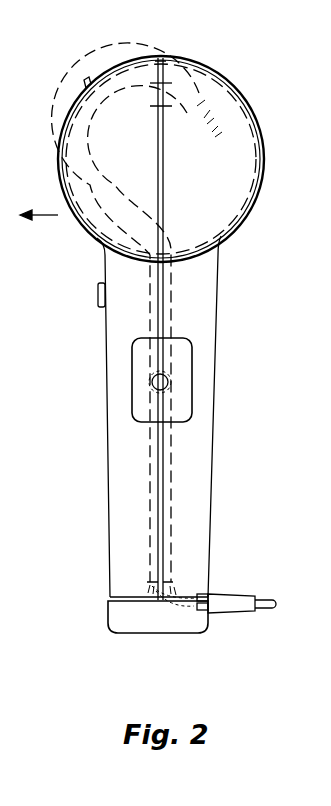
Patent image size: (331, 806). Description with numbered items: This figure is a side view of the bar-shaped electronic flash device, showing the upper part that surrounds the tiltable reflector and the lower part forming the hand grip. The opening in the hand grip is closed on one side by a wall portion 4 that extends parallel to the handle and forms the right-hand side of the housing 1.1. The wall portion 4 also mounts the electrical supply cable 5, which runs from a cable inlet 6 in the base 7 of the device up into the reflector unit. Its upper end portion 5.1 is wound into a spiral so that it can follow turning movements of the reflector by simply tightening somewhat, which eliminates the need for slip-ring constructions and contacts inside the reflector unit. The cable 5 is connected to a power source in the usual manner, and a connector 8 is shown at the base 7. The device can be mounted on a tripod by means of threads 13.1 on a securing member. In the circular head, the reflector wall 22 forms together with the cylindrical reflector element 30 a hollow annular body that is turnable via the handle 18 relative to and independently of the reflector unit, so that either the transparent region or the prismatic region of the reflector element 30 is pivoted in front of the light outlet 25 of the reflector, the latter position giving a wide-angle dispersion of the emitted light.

The housing 1.1 is at (200, 227).
The wall portion 4 is at (198, 467).
The electrical supply cable 5 is at (168, 515).
The upper end portion of the cable 5.1 is at (98, 210).
The cable inlet 6 is at (200, 593).
The base 7 is at (132, 622).
The plug connector 8 is at (247, 603).
The threads 13.1 is at (170, 382).
The handle 18 is at (87, 79).
The reflector wall 22 is at (148, 57).
The light outlet 25 is at (42, 207).
The reflector element 30 is at (78, 103).